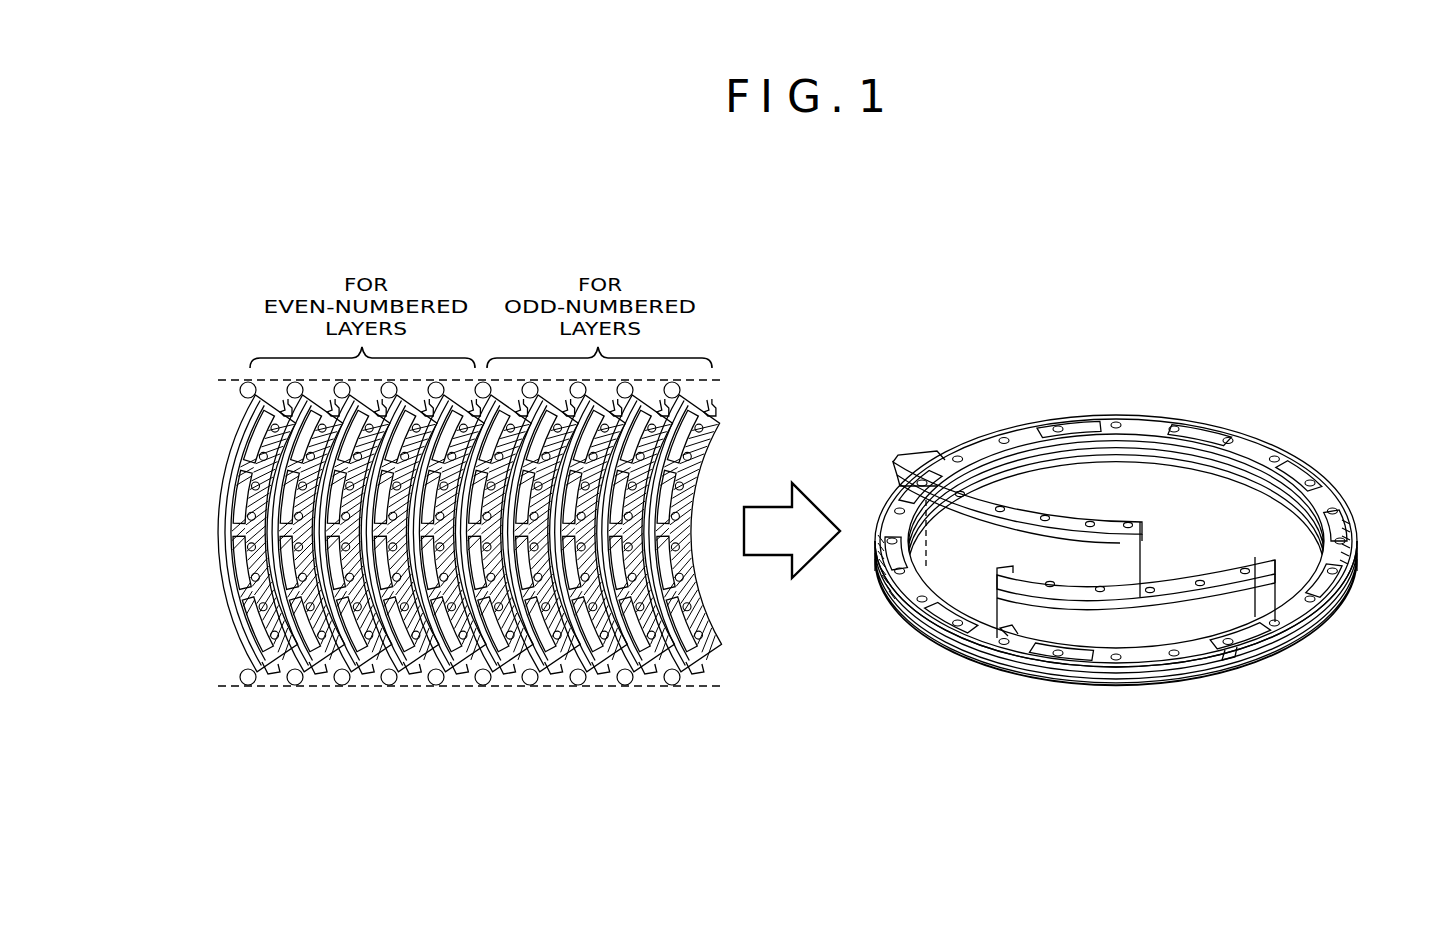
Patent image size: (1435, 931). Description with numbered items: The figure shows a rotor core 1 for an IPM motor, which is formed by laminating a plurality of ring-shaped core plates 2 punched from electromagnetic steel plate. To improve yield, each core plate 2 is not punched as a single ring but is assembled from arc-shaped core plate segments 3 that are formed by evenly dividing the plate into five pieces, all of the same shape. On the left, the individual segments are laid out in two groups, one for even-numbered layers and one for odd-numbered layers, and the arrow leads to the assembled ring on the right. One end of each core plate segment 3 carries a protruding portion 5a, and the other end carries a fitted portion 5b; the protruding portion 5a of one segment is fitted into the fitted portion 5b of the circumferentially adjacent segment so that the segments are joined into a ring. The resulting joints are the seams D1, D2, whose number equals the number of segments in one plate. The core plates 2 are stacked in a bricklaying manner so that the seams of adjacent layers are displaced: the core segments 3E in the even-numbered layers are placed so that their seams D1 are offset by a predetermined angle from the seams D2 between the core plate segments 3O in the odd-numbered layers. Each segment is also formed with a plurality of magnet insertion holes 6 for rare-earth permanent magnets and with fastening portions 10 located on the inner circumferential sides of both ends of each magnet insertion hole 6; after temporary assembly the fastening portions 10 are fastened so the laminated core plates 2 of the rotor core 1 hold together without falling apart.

The rotor core 1 is at (1126, 325).
The core plate 2 is at (1362, 488).
The core plate segment 3 is at (510, 668).
The core plate segment in odd-numbered layer 3O is at (1133, 600).
The core segment in even-numbered layer 3E is at (1013, 500).
The protruding portion 5a is at (1010, 640).
The fitted portion 5b is at (1008, 572).
The magnet insertion hole 6 is at (1210, 422).
The fastening portion 10 is at (1232, 656).
The seam D1 is at (1142, 560).
The seam D2 is at (985, 600).